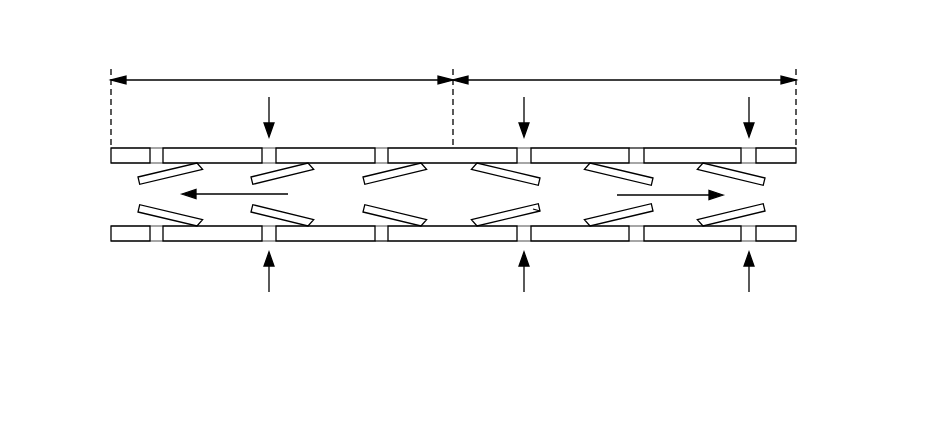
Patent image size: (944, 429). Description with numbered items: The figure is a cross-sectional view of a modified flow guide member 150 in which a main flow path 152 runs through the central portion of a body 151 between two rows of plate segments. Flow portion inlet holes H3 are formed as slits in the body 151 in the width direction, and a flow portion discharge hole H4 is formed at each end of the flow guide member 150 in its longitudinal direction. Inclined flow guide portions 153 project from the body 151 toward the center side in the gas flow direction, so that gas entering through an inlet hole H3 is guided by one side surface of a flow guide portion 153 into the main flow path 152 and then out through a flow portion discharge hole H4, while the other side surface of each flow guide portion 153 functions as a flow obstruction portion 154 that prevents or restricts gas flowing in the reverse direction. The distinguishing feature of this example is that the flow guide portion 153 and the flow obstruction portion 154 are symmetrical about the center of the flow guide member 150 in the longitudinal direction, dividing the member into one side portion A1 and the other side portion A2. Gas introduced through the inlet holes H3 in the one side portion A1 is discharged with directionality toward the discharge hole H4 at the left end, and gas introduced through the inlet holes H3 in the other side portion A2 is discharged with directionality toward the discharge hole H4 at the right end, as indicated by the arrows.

The flow guide member 150 is at (124, 48).
The body 151 is at (132, 233).
The main flow path 152 is at (323, 180).
The flow guide portion 153 is at (517, 213).
The flow obstruction portion 154 is at (533, 207).
The flow portion inlet hole H3 is at (636, 147).
The flow portion discharge hole H4 is at (124, 204).
The one side portion A1 is at (282, 68).
The other side portion A2 is at (624, 68).